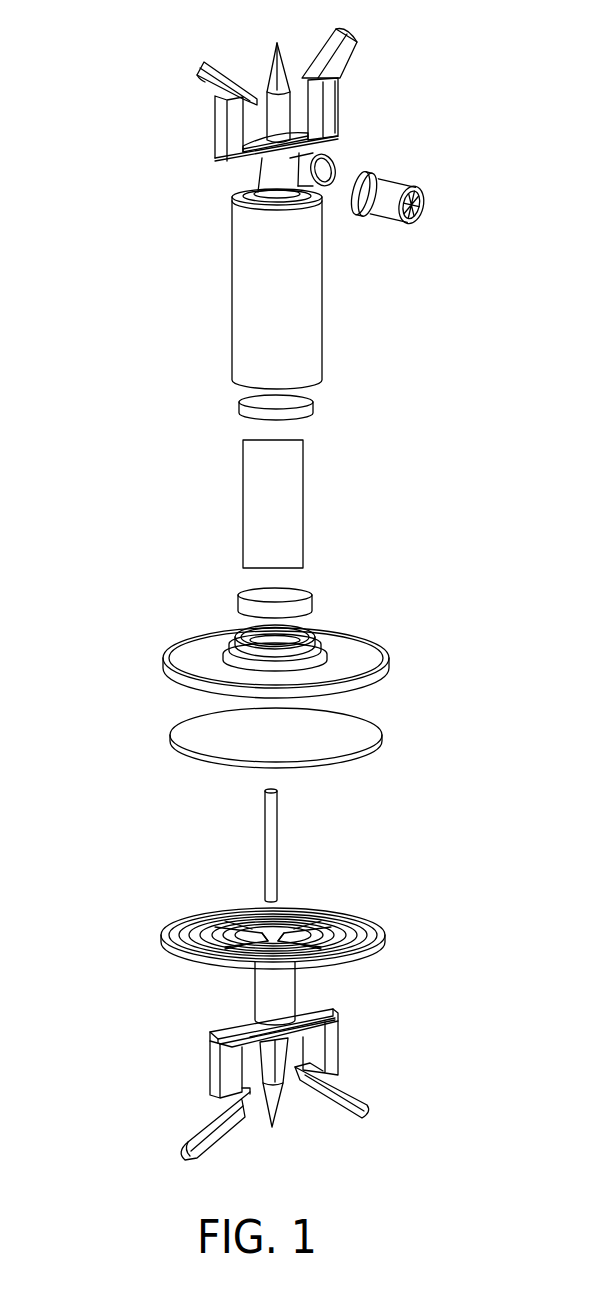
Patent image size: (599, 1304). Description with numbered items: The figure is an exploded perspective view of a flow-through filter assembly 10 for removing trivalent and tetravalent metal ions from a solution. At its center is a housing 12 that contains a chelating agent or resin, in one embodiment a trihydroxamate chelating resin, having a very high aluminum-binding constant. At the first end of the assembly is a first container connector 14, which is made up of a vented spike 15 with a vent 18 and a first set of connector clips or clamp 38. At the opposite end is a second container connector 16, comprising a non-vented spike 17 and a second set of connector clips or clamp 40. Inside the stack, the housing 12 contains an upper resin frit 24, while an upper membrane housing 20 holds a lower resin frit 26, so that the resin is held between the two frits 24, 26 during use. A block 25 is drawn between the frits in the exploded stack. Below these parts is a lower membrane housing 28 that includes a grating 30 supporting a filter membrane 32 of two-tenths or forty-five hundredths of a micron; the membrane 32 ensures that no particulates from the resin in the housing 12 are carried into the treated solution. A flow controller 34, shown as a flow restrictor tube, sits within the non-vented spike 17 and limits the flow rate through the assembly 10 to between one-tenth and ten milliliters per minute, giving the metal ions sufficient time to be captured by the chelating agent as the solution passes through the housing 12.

The flow-through filter assembly 10 is at (476, 157).
The housing 12 is at (233, 318).
The first container connector 14 is at (161, 157).
The vented spike 15 is at (273, 64).
The second container connector 16 is at (388, 1045).
The non-vented spike 17 is at (283, 1090).
The vent 18 is at (336, 163).
The upper membrane housing 20 is at (368, 648).
The upper resin frit 24 is at (240, 410).
The block 25 is at (245, 530).
The lower resin frit 26 is at (309, 603).
The lower membrane housing 28 is at (366, 962).
The grating 30 is at (226, 920).
The filter membrane 32 is at (171, 742).
The flow controller 34 is at (277, 843).
The first set of connector clips or clamp 38 is at (222, 130).
The second set of connector clips or clamp 40 is at (200, 1124).